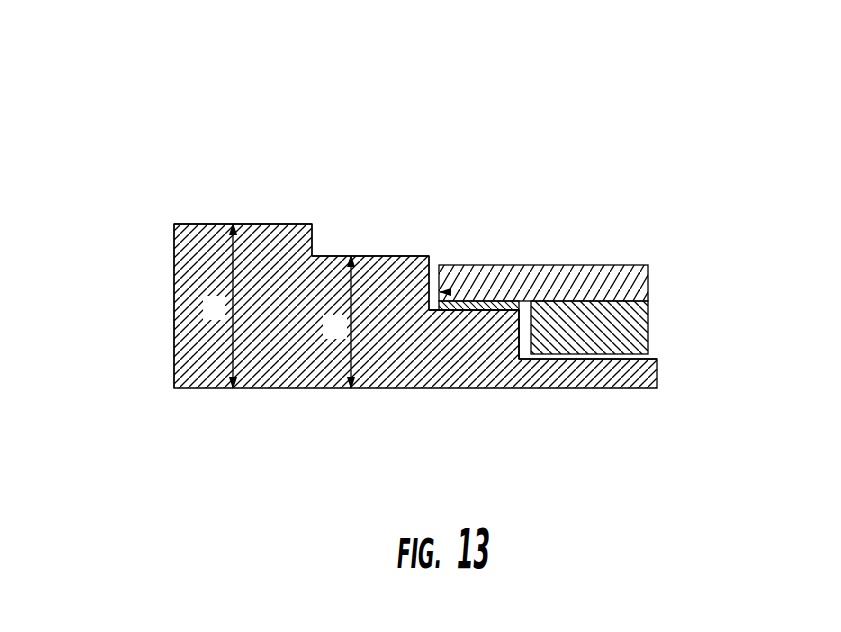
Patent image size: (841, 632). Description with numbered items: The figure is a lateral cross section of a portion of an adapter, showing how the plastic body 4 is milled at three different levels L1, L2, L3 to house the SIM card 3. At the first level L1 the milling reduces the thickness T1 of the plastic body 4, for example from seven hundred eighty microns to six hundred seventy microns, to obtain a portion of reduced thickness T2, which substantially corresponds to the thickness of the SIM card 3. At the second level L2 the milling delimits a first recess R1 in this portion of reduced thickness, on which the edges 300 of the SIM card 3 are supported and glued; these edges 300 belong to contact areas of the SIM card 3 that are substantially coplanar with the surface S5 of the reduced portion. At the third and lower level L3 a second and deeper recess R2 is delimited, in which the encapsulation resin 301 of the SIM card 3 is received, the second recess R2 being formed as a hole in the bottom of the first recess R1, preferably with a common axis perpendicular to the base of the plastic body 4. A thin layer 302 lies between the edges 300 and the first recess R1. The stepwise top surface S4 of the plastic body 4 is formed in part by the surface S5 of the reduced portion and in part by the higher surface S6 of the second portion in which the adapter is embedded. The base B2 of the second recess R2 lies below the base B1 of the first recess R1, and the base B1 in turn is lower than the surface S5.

The SIM card 3 is at (587, 251).
The plastic body 4 is at (172, 393).
The edges of the SIM card 300 is at (606, 263).
The encapsulation resin 301 is at (650, 313).
The intermediate thin layer 302 is at (482, 302).
The stepwise top surface S4 is at (162, 200).
The surface of the portion of reduced thickness S5 is at (342, 257).
The surface of the second portion S6 is at (202, 223).
The thickness of the plastic body T1 is at (218, 306).
The reduced thickness T2 is at (337, 322).
The first level L1 is at (313, 253).
The second level L2 is at (430, 294).
The third level L3 is at (517, 361).
The base of the first recess B1 is at (497, 312).
The base of the second recess B2 is at (565, 361).
The first recess R1 is at (466, 312).
The second recess R2 is at (521, 341).